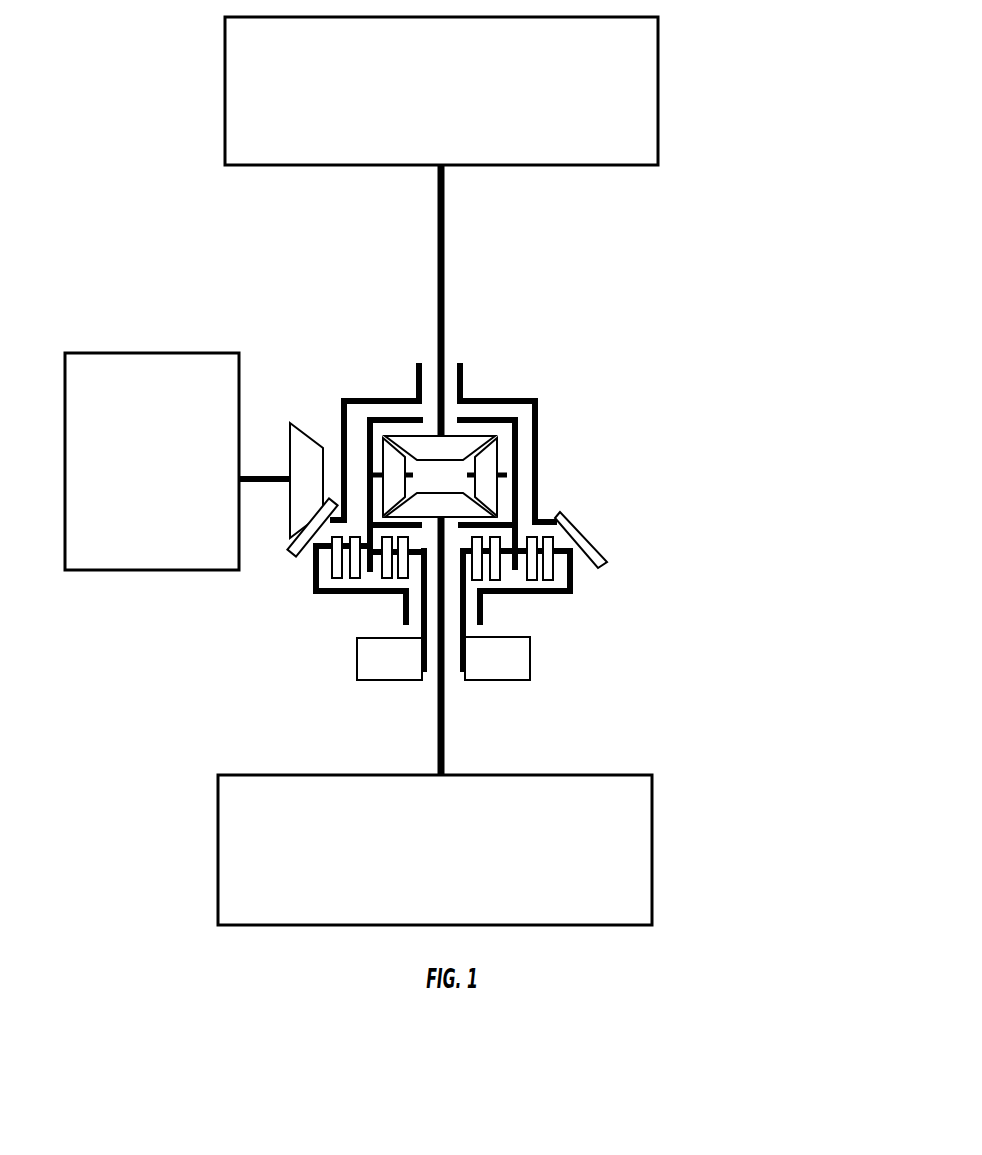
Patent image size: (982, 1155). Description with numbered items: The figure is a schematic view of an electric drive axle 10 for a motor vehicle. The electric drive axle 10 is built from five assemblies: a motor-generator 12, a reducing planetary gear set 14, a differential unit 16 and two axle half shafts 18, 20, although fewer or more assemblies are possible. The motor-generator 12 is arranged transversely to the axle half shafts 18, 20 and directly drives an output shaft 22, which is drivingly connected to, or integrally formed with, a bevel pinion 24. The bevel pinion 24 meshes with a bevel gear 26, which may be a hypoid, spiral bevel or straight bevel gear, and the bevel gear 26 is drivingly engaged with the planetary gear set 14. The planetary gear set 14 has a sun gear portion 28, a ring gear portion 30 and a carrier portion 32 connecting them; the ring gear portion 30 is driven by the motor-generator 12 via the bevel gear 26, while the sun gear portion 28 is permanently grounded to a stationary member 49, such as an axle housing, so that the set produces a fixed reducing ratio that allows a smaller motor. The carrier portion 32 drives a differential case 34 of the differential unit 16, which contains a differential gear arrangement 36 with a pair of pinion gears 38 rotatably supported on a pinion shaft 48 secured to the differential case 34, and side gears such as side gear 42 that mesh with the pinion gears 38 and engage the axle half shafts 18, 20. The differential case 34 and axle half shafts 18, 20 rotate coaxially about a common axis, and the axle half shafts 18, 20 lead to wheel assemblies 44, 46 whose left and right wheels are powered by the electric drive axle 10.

The electric drive axle 10 is at (772, 315).
The motor-generator 12 is at (152, 400).
The reducing planetary gear set 14 is at (345, 600).
The differential unit 16 is at (350, 363).
The axle half shaft 18 is at (445, 240).
The axle half shaft 20 is at (445, 737).
The output shaft 22 is at (265, 473).
The bevel pinion 24 is at (306, 432).
The bevel gear 26 is at (290, 560).
The sun gear portion 28 is at (480, 580).
The ring gear portion 30 is at (537, 560).
The carrier portion 32 is at (520, 543).
The differential case 34 is at (495, 418).
The differential gear arrangement 36 is at (429, 491).
The pinion gears 38 is at (497, 456).
The side gear 42 is at (487, 507).
The wheel assembly 44 is at (429, 102).
The wheel assembly 46 is at (427, 859).
The pinion shaft 48 is at (377, 482).
The stationary member 49 is at (393, 670).